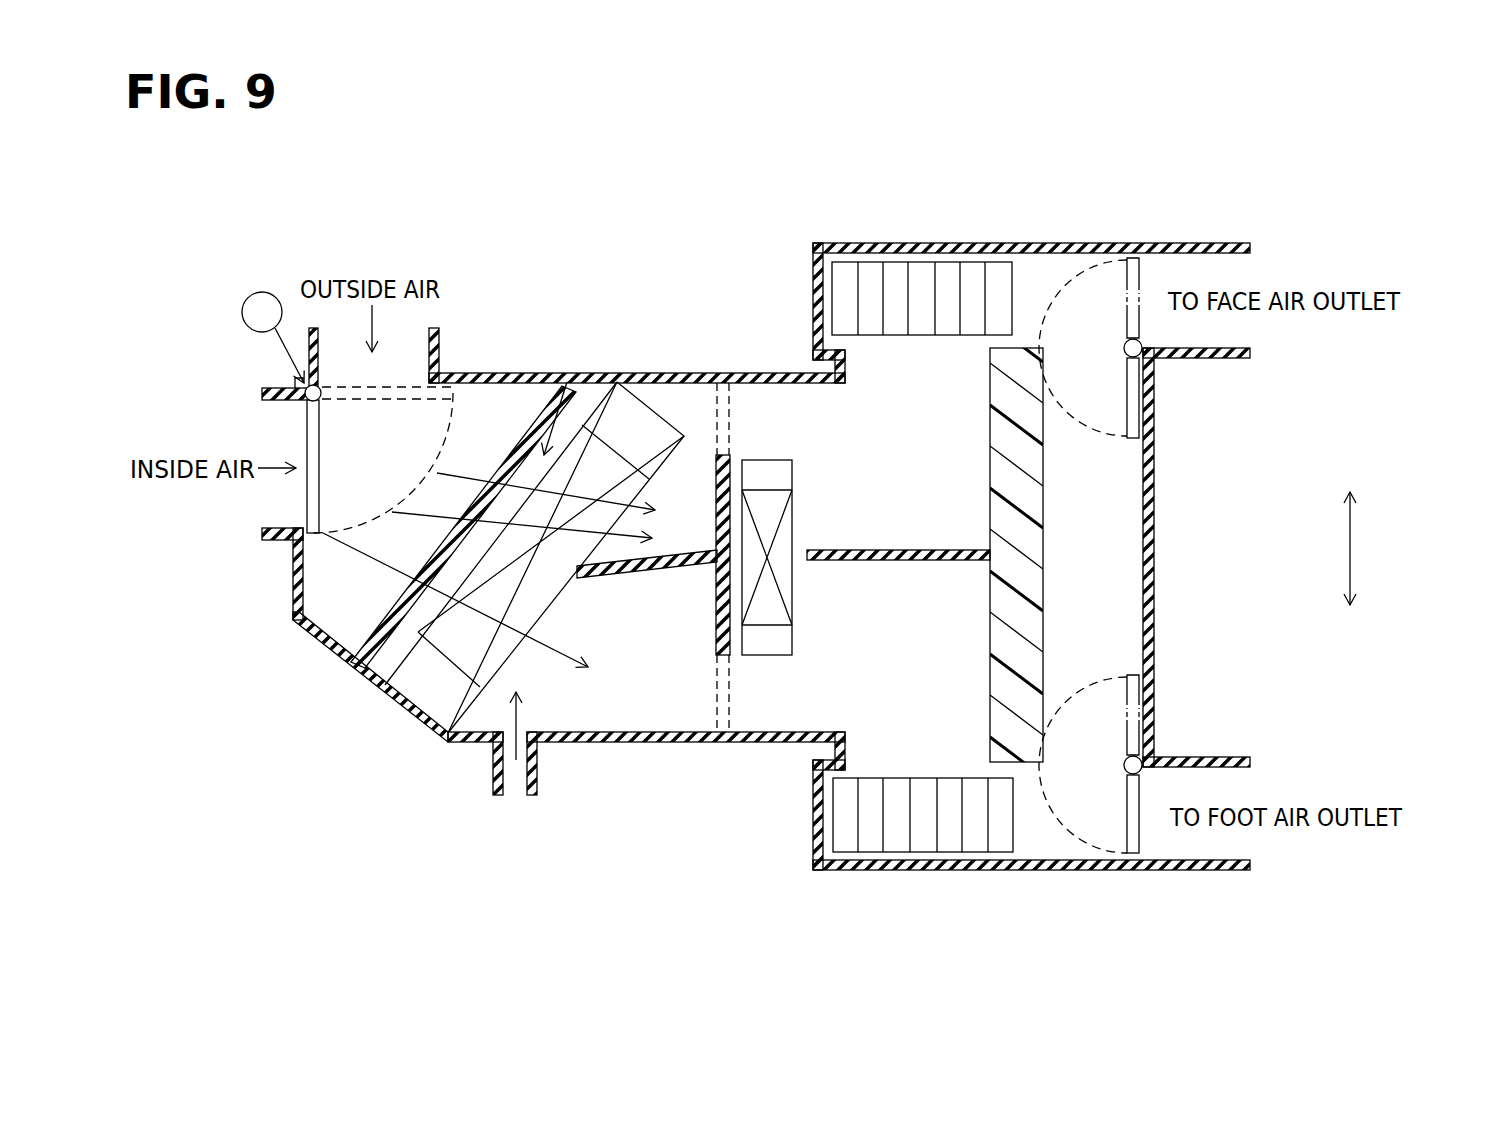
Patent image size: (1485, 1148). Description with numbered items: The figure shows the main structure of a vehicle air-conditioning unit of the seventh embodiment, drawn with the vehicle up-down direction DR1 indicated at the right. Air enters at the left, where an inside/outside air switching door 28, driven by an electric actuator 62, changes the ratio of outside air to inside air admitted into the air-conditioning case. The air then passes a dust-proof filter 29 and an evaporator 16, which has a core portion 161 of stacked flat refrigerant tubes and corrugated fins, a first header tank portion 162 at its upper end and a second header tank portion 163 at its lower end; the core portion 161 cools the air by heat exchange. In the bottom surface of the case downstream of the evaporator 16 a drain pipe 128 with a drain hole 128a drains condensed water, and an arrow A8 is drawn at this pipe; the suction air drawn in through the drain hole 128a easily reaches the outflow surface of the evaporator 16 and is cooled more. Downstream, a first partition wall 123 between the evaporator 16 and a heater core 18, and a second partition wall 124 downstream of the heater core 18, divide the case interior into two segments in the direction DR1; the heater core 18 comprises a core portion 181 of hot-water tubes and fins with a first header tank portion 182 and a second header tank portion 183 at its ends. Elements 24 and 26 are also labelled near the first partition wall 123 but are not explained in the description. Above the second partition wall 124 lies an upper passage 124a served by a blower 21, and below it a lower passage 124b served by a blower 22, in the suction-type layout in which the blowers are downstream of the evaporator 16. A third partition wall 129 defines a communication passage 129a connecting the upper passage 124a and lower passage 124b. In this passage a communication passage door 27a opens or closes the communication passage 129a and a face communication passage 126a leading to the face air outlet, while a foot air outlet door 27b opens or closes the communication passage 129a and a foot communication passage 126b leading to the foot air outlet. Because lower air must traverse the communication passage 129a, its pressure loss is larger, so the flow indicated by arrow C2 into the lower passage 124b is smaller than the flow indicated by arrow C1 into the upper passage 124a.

The electric actuator 62 is at (260, 292).
The inside/outside air switching door 28 is at (305, 428).
The second header tank portion 163 is at (413, 682).
The drain pipe 128 is at (493, 775).
The drain hole 128a is at (510, 782).
The air flow A8 is at (519, 720).
The dust-proof filter 29 is at (522, 440).
The evaporator 16 is at (590, 375).
The first header tank portion 162 is at (626, 435).
The core portion 161 is at (640, 500).
The arrow C1 is at (437, 510).
The arrow C2 is at (560, 660).
The first partition wall 123 is at (648, 573).
The door plate 24 is at (715, 480).
The first header tank portion 182 is at (728, 462).
The door open position lower 26 is at (718, 640).
The heater core 18 is at (752, 470).
The core portion 181 is at (760, 613).
The second header tank portion 183 is at (773, 643).
The second partition wall 124 is at (793, 505).
The upper passage 124a is at (903, 384).
The lower passage 124b is at (903, 708).
The blower 21 is at (947, 277).
The blower 22 is at (953, 838).
The third partition wall 129 is at (1047, 587).
The communication passage 129a is at (1100, 520).
The face communication passage 126a is at (1152, 298).
The foot communication passage 126b is at (1155, 815).
The communication passage door 27a is at (1135, 403).
The foot air outlet door 27b is at (1135, 795).
The up-down direction DR1 is at (1350, 548).